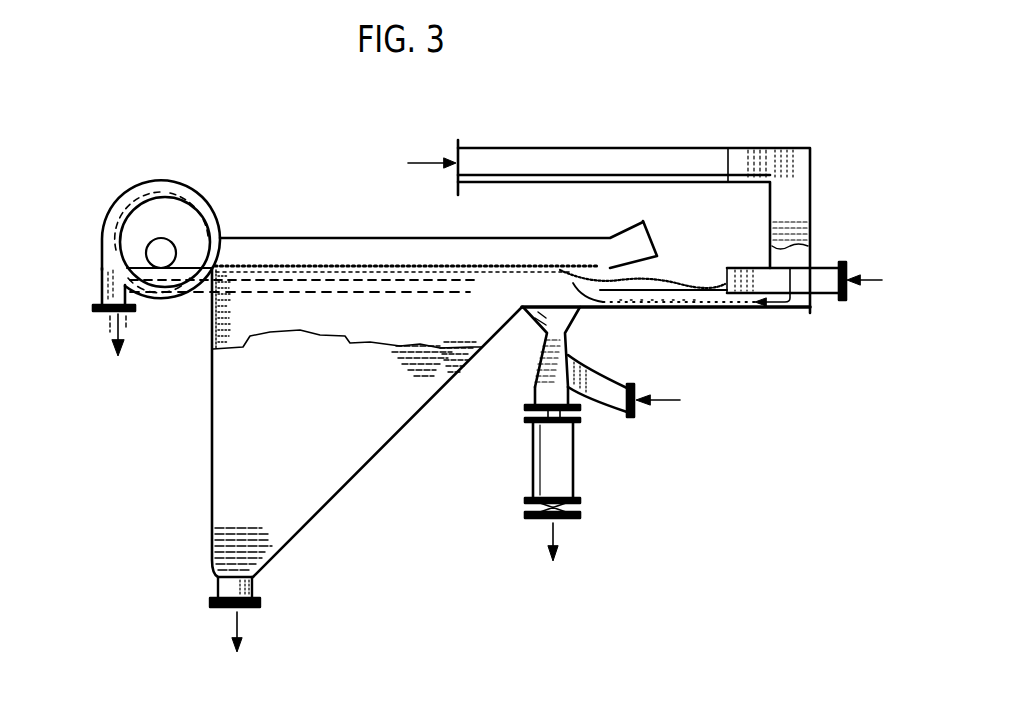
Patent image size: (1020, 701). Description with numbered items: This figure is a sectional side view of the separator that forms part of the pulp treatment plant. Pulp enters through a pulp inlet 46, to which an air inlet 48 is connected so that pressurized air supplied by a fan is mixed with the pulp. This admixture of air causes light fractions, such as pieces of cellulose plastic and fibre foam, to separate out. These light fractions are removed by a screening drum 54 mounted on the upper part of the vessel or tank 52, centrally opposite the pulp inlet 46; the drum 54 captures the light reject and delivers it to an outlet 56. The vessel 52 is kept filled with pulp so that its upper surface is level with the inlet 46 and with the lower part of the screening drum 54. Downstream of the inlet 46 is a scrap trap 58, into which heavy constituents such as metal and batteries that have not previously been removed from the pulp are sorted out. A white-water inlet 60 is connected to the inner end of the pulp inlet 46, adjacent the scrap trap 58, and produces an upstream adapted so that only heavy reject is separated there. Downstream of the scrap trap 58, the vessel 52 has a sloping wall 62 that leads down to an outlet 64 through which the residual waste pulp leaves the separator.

The pulp inlet 46 is at (822, 280).
The air inlet 48 is at (693, 311).
The vessel or tank 52 is at (204, 434).
The screening drum 54 is at (177, 184).
The outlet 56 is at (101, 292).
The scrap trap 58 is at (537, 395).
The white-water inlet 60 is at (614, 414).
The sloping wall 62 is at (377, 442).
The outlet 64 is at (253, 589).